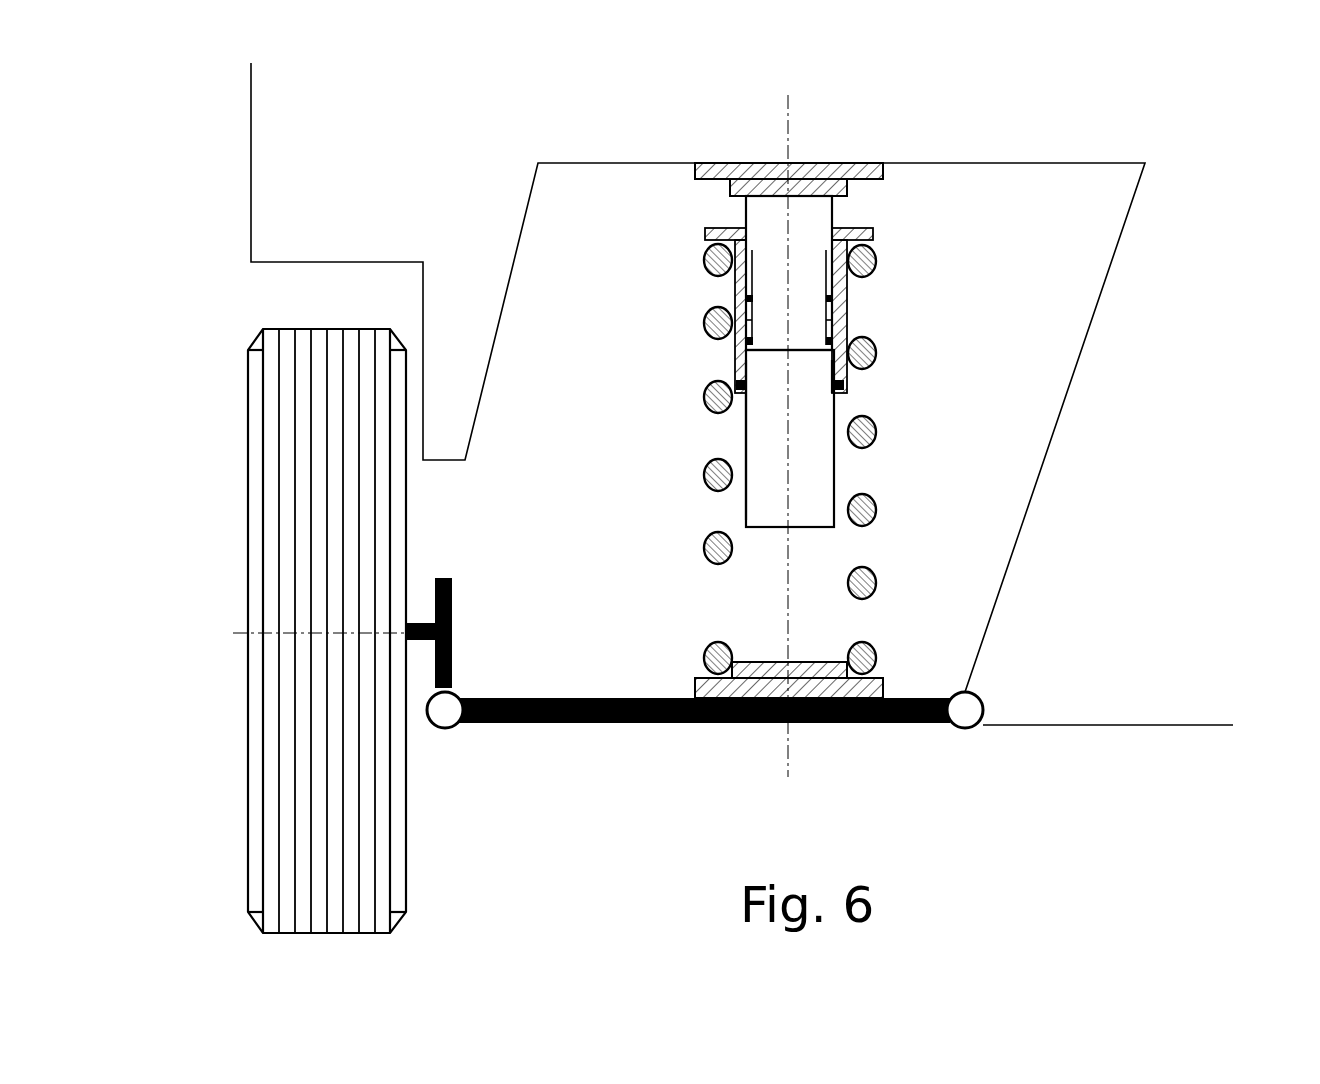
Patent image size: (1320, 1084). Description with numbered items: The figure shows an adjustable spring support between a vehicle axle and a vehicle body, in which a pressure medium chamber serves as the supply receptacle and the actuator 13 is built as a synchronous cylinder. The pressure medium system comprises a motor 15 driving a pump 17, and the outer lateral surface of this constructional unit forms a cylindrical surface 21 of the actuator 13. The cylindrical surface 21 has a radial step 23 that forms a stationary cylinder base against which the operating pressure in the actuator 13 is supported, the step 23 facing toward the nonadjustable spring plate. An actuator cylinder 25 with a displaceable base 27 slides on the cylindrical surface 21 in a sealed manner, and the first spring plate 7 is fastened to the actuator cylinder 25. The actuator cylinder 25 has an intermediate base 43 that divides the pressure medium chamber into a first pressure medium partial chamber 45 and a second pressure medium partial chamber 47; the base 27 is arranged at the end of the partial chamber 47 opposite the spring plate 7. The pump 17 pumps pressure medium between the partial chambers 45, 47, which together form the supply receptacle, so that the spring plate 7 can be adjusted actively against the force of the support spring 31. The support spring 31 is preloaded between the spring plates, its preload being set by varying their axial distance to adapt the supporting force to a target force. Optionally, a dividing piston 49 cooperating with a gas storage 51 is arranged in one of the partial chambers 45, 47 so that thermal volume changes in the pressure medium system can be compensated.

The first spring plate 7 is at (703, 235).
The base 27 is at (740, 236).
The actuator 13 is at (724, 290).
The actuator cylinder 25 is at (742, 354).
The cylindrical surface 21 is at (742, 432).
The pump 17 is at (812, 219).
The first pressure medium partial chamber 45 is at (878, 266).
The intermediate base 43 is at (847, 300).
The second pressure medium partial chamber 47 is at (847, 312).
The dividing piston 49 is at (847, 331).
The gas storage 51 is at (847, 334).
The radial step 23 is at (847, 376).
The motor 15 is at (812, 472).
The support spring 31 is at (880, 590).